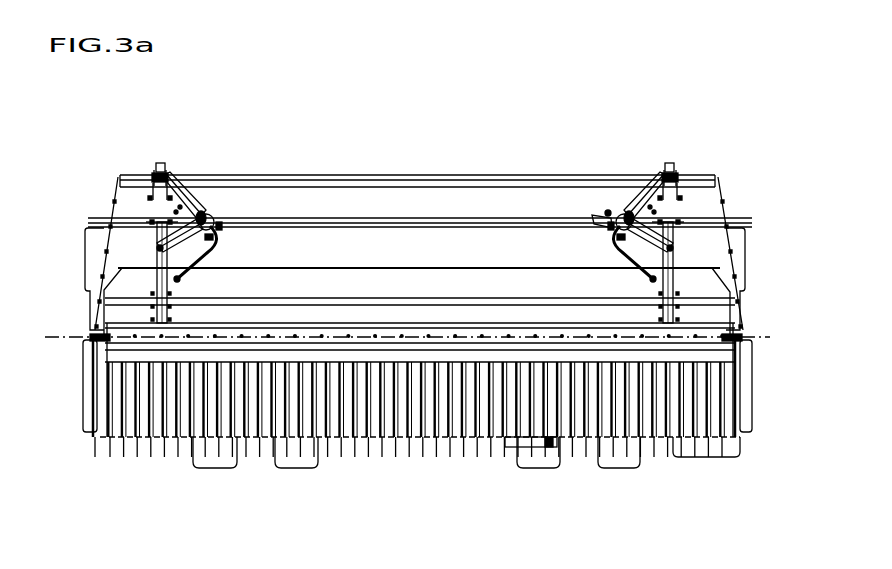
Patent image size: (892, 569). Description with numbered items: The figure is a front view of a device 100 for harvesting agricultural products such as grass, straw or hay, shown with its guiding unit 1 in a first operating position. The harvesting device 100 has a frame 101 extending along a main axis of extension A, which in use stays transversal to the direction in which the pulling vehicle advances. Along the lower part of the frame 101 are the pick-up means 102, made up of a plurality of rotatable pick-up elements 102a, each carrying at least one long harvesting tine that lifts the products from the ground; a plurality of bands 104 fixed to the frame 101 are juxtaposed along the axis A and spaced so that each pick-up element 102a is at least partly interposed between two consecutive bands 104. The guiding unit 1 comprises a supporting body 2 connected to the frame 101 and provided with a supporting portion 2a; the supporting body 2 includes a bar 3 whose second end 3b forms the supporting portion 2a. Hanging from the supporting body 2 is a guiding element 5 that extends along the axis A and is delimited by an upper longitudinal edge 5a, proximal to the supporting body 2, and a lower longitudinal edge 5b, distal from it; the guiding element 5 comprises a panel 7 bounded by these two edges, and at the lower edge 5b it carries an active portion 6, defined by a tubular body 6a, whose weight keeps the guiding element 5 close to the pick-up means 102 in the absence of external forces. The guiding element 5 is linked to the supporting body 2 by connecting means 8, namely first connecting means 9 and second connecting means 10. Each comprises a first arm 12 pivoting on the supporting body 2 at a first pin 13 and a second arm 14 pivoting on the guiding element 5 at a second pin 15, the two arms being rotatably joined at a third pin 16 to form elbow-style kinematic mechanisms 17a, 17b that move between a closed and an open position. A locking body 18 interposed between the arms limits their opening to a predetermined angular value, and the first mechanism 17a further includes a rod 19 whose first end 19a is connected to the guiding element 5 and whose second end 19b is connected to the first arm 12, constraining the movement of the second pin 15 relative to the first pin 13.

The guiding unit 1 is at (405, 172).
The supporting body 2 is at (297, 172).
The supporting portion 2a is at (165, 172).
The bar 3 is at (160, 160).
The second end 3b is at (154, 170).
The guiding element 5 is at (435, 320).
The upper longitudinal edge 5a is at (503, 262).
The lower longitudinal edge 5b is at (555, 347).
The active portion 6 is at (618, 350).
The tubular body 6a is at (713, 347).
The panel 7 is at (300, 280).
The connecting means 8 is at (183, 190).
The first connecting means 9 is at (200, 195).
The second connecting means 10 is at (608, 213).
The first arm 12 is at (152, 199).
The first pin 13 is at (152, 182).
The second arm 14 is at (140, 222).
The second pin 15 is at (160, 248).
The third pin 16 is at (218, 214).
The elbow-style kinematic mechanism 17a is at (210, 205).
The elbow-style kinematic mechanism 17b is at (592, 218).
The locking body 18 is at (220, 226).
The rod 19 is at (197, 263).
The first end 19a is at (177, 280).
The second end 19b is at (210, 236).
The harvesting device 100 is at (104, 175).
The frame 101 is at (83, 274).
The pick-up means 102 is at (80, 408).
The pick-up elements 102a is at (117, 457).
The bands 104 is at (400, 428).
The main axis of extension A is at (62, 340).